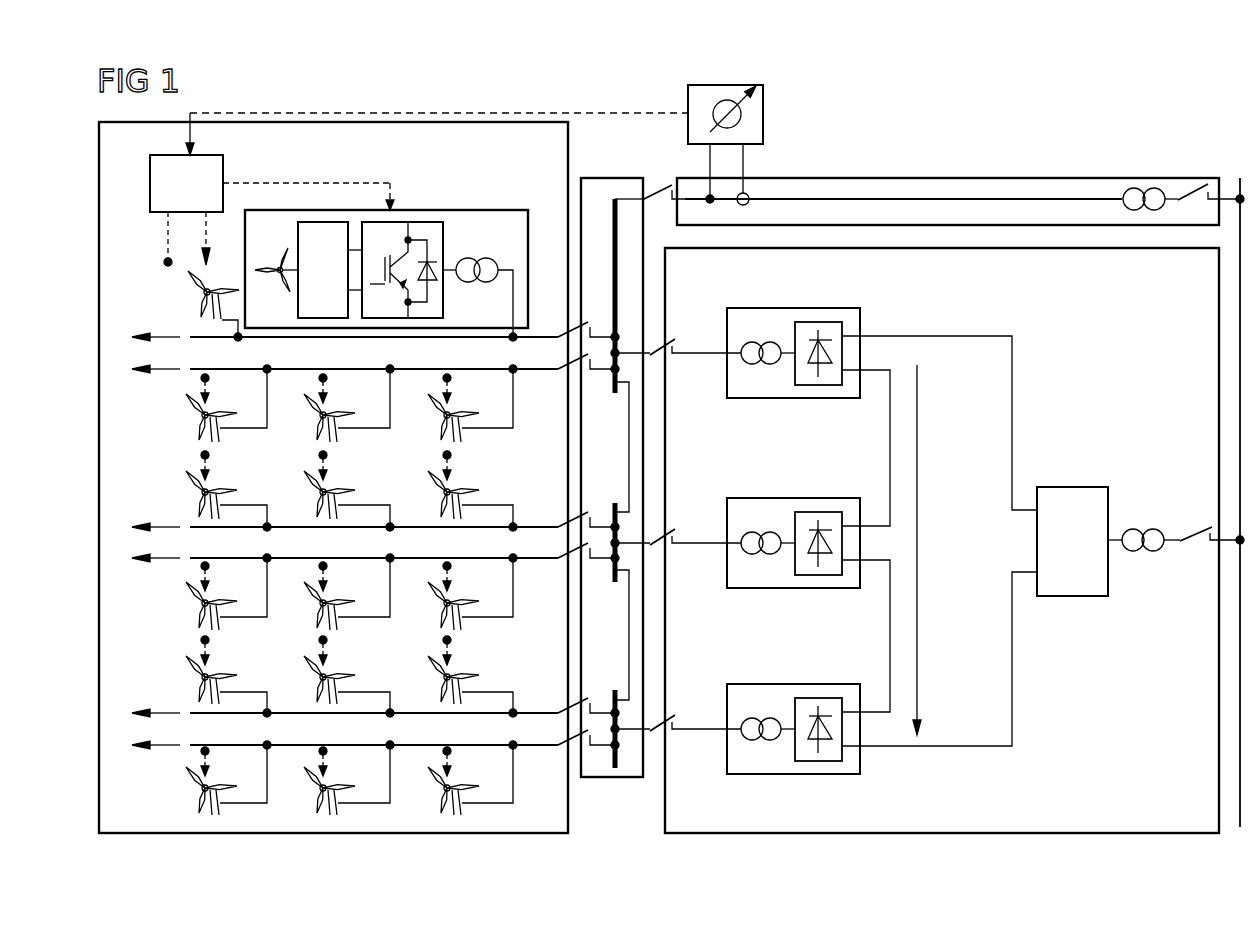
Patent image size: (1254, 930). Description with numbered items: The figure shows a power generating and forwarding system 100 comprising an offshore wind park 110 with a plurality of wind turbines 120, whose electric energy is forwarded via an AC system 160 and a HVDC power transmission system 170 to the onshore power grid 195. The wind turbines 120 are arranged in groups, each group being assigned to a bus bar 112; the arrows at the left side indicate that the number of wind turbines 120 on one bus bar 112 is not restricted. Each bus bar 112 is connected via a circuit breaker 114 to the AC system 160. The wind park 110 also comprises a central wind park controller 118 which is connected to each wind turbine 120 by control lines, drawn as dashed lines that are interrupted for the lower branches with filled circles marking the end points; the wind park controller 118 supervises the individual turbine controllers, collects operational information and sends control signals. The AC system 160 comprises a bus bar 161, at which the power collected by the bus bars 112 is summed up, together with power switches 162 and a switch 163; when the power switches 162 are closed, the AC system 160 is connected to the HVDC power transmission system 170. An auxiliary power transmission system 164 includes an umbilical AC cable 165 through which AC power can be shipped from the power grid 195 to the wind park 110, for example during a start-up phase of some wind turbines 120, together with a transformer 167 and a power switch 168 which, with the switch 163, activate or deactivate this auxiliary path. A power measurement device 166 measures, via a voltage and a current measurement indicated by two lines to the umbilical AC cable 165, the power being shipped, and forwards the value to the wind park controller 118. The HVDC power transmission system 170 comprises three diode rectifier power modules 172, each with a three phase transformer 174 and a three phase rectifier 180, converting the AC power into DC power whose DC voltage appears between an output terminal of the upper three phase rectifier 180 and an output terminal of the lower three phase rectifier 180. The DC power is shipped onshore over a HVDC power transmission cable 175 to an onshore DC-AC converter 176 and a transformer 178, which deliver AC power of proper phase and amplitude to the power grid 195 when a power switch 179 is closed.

The power generating and forwarding system 100 is at (1188, 113).
The wind park 110 is at (360, 122).
The bus bar 112 is at (535, 372).
The circuit breaker 114 is at (580, 782).
The wind park controller 118 is at (225, 168).
The wind turbine 120 is at (462, 210).
The AC system 160 is at (612, 178).
The bus bar 161 is at (629, 452).
The power switch 162 is at (660, 345).
The switch 163 is at (660, 185).
The auxiliary power transmission system 164 is at (960, 155).
The umbilical AC cable 165 is at (862, 199).
The power measurement device 166 is at (763, 115).
The transformer 167 is at (1134, 188).
The power switch 168 is at (1196, 185).
The HVDC power transmission system 170 is at (665, 805).
The diode rectifier power module 172 is at (800, 308).
The three phase transformer 174 is at (750, 342).
The HVDC power transmission cable 175 is at (935, 336).
The onshore DC-AC converter 176 is at (1075, 487).
The transformer 178 is at (1133, 529).
The power switch 179 is at (1194, 529).
The three phase rectifier 180 is at (818, 322).
The power grid 195 is at (1240, 367).